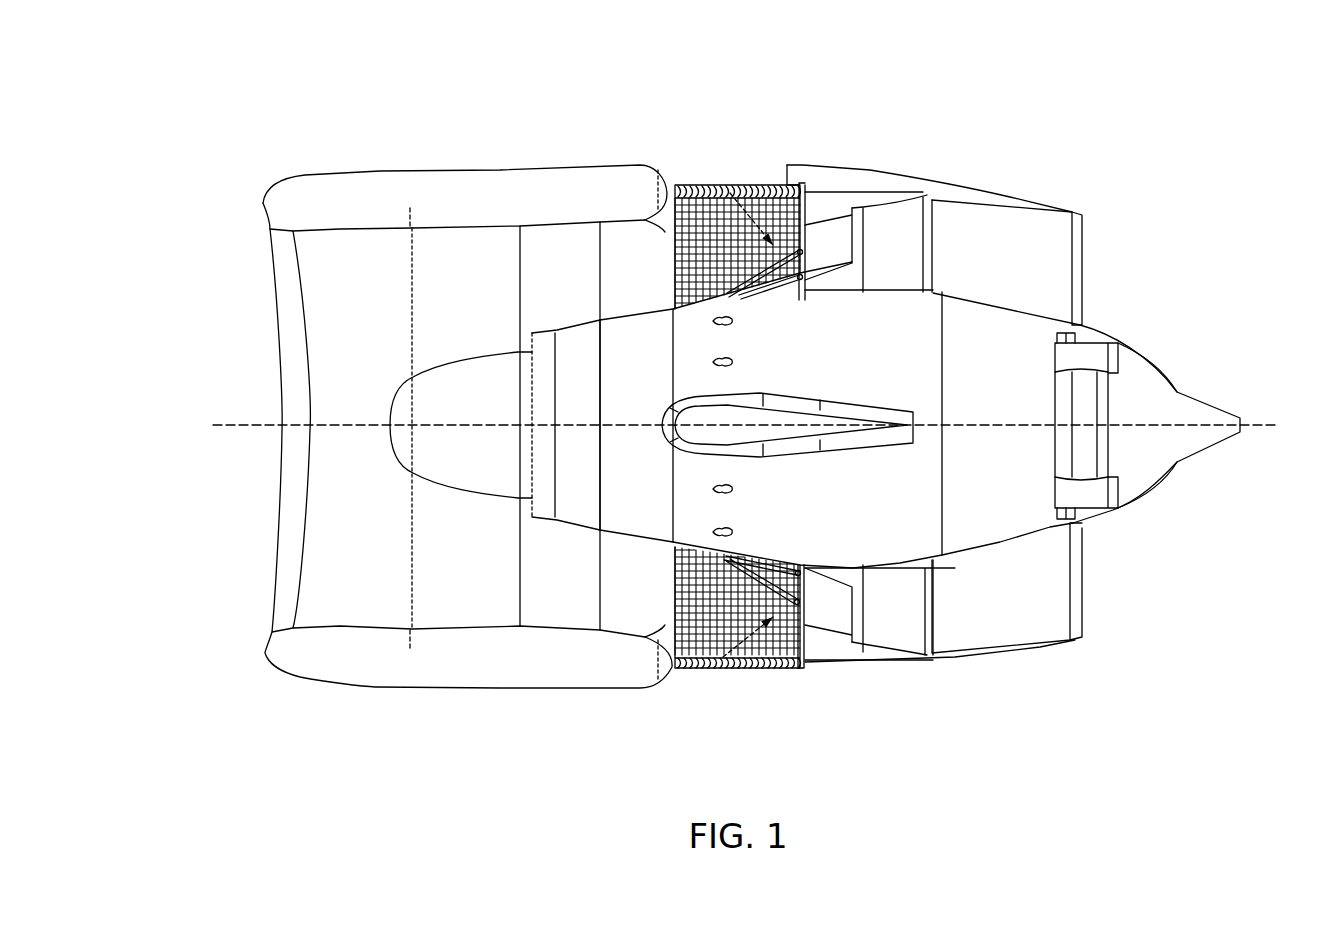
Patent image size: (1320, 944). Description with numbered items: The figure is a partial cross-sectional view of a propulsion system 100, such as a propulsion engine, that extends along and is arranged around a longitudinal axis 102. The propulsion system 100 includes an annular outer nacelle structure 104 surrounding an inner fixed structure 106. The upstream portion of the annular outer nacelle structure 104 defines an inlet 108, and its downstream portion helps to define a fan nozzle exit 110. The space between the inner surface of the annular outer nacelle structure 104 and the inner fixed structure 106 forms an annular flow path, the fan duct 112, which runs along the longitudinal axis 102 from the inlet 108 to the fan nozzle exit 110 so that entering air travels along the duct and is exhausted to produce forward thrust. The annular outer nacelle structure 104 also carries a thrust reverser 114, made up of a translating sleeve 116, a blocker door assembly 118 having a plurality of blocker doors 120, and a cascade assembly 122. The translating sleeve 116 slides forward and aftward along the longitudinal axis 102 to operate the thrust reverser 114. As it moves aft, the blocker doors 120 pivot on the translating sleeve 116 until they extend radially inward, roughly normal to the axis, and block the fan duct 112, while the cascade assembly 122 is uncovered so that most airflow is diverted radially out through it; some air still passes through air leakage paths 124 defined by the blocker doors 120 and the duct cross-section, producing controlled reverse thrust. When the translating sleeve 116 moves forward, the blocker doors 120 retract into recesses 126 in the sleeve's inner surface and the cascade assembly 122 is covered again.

The propulsion system 100 is at (212, 118).
The longitudinal axis 102 is at (248, 437).
The annular outer nacelle structure 104 is at (262, 245).
The inner fixed structure 106 is at (580, 345).
The inlet 108 is at (290, 388).
The fan nozzle exit 110 is at (1085, 265).
The fan duct 112 is at (505, 280).
The thrust reverser 114 is at (760, 155).
The translating sleeve 116 is at (853, 178).
The blocker door assembly 118 is at (721, 190).
The blocker doors 120 is at (803, 195).
The cascade assembly 122 is at (692, 177).
The air leakage paths 124 is at (808, 284).
The recesses 126 is at (837, 248).